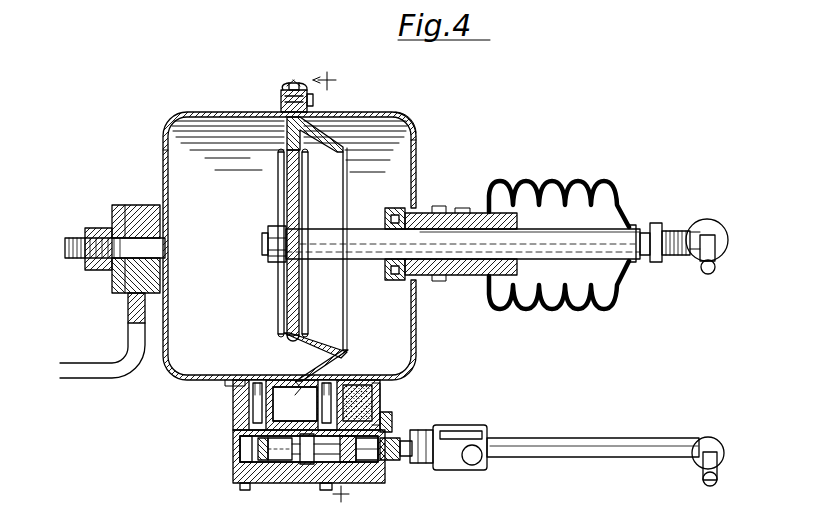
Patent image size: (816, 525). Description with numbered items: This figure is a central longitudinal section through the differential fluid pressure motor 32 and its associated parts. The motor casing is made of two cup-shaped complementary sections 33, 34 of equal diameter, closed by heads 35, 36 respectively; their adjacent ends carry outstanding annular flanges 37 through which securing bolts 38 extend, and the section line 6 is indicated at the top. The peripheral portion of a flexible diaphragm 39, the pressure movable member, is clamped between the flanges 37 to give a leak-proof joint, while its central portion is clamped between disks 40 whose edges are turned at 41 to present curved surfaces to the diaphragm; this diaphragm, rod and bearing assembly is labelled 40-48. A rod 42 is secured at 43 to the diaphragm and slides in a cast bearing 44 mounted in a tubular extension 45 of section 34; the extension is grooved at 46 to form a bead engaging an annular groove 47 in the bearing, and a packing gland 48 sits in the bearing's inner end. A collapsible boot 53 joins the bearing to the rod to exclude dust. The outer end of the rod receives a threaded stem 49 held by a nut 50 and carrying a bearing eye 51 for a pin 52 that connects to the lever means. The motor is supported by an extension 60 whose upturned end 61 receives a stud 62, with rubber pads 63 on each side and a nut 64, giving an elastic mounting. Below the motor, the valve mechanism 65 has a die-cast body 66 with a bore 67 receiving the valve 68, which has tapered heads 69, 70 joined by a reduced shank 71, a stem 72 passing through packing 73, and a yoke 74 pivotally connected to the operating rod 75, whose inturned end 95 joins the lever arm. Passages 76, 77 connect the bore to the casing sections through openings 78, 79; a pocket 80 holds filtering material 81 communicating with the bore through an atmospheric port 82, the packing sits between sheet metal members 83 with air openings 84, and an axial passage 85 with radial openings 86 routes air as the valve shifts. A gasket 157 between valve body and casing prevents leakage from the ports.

The motor 32 is at (374, 112).
The complementary casing section 33 is at (214, 112).
The complementary casing section 34 is at (408, 121).
The head 35 is at (163, 156).
The head 36 is at (417, 140).
The annular flanges 37 is at (280, 84).
The securing bolts 38 is at (281, 92).
The section line 6 is at (324, 72).
The flexible diaphragm 39 is at (347, 318).
The disks 40 is at (287, 208).
The turned disk edges 41 is at (278, 336).
The piston assembly 40-48 is at (302, 205).
The rod 42 is at (366, 229).
The rod securing means 43 is at (273, 263).
The bearing 44 is at (478, 212).
The tubular extension 45 is at (458, 207).
The circumferential groove 46 is at (440, 206).
The annular groove 47 is at (440, 232).
The packing gland 48 is at (395, 208).
The flexible collapsible boot 53 is at (553, 181).
The threaded stem 49 is at (672, 231).
The nut 50 is at (656, 223).
The bearing eye 51 is at (718, 224).
The pin 52 is at (716, 245).
The rigid integral extension 60 is at (80, 363).
The upturned bracket end 61 is at (128, 324).
The stud 62 is at (68, 238).
The rubber washers or pads 63 is at (149, 205).
The nut 64 is at (98, 228).
The valve mechanism 65 is at (233, 463).
The valve body 66 is at (385, 476).
The bore 67 is at (311, 484).
The valve 68 is at (250, 445).
The valve head 69 is at (308, 466).
The valve head 70 is at (262, 483).
The reduced shank 71 is at (280, 483).
The reduced stem 72 is at (432, 430).
The packing 73 is at (406, 440).
The yoke 74 is at (464, 426).
The valve operating rod 75 is at (568, 438).
The passage 76 is at (233, 406).
The passage 77 is at (333, 395).
The opening 78 is at (256, 380).
The opening 79 is at (347, 380).
The pocket 80 is at (393, 375).
The filtering material 81 is at (372, 398).
The atmospheric port 82 is at (372, 403).
The sheet metal members 83 is at (380, 420).
The openings 84 is at (382, 400).
The axial passage 85 is at (366, 465).
The radial openings 86 is at (347, 466).
The inturned rod end 95 is at (707, 452).
The packing member or gasket 157 is at (232, 383).